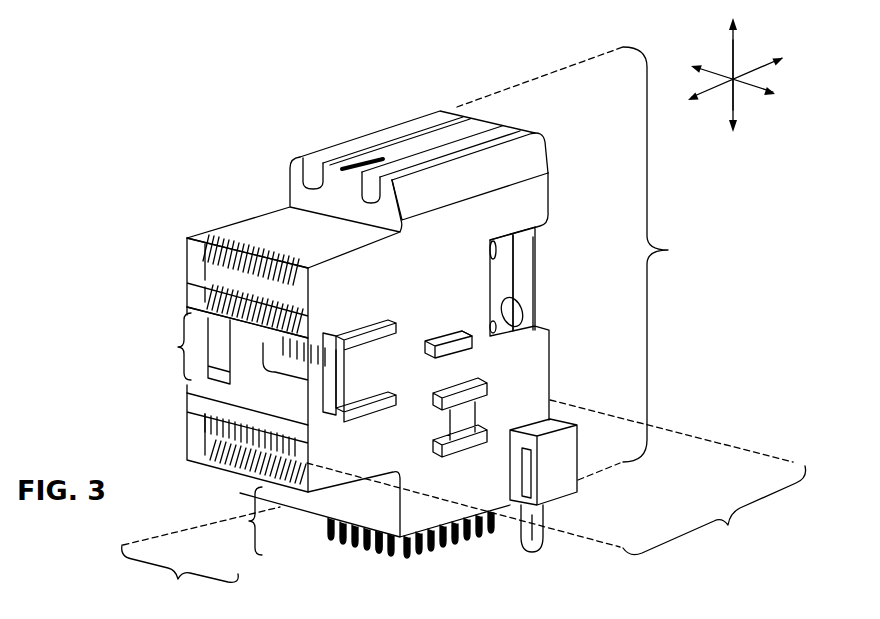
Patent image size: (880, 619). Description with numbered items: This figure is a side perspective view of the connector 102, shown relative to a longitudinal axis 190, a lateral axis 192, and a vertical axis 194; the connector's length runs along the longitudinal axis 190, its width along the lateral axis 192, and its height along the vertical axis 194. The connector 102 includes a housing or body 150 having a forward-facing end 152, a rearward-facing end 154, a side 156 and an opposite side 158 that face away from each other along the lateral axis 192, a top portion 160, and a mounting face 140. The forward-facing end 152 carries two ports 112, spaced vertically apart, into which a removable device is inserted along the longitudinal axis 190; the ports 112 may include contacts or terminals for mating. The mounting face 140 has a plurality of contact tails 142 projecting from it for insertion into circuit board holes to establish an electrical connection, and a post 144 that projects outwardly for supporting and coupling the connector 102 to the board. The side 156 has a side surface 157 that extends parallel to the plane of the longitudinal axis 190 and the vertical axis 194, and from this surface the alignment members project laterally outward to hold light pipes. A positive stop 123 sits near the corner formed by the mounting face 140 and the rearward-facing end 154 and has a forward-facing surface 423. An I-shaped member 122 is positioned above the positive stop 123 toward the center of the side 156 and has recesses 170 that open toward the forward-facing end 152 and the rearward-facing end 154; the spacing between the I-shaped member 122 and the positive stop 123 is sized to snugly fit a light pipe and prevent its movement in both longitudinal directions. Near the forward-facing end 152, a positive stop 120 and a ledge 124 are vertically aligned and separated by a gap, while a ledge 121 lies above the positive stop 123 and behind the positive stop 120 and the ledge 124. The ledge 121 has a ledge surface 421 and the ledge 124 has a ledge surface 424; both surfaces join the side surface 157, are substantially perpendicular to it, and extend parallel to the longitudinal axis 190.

The connector 102 is at (265, 74).
The ports 112 is at (196, 232).
The positive stop 120 is at (366, 333).
The ledge 121 is at (455, 347).
The I-shaped member 122 is at (486, 389).
The positive stop 123 is at (567, 453).
The ledge 124 is at (403, 405).
The mounting face 140 is at (442, 552).
The contact tails 142 is at (378, 547).
The post 144 is at (531, 553).
The housing or body 150 is at (262, 220).
The forward-facing end 152 is at (170, 370).
The rearward-facing end 154 is at (552, 270).
The side 156 is at (545, 172).
The side surface 157 is at (547, 173).
The side 158 is at (345, 114).
The top portion 160 is at (418, 90).
The recesses 170 is at (436, 424).
The longitudinal axis 190 is at (758, 66).
The lateral axis 192 is at (745, 86).
The vertical axis 194 is at (731, 58).
The ledge surface 421 is at (463, 330).
The forward-facing surface 423 is at (518, 477).
The ledge surface 424 is at (353, 400).